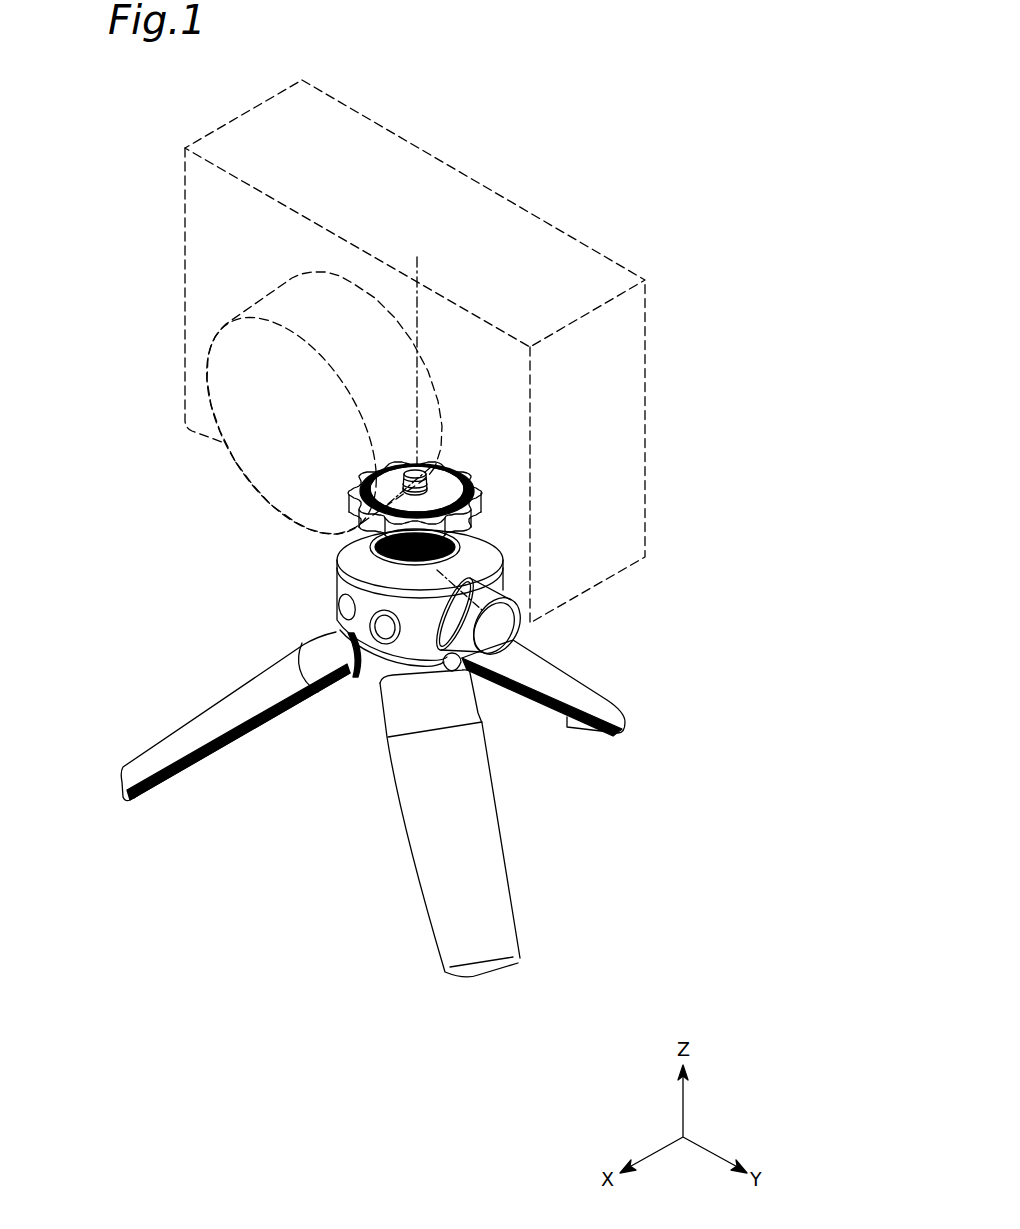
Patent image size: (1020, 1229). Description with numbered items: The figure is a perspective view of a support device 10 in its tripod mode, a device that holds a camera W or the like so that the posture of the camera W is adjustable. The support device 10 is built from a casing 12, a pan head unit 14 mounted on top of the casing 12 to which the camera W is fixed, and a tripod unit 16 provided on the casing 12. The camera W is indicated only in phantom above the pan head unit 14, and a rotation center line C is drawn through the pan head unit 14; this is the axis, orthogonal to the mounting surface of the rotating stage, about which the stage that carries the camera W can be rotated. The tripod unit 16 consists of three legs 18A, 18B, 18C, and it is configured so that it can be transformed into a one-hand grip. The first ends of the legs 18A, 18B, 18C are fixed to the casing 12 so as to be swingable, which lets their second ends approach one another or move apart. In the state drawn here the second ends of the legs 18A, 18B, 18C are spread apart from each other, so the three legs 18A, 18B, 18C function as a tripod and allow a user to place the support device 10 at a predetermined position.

The camera W is at (185, 275).
The rotation center line C is at (417, 257).
The support device 10 is at (206, 554).
The casing 12 is at (342, 580).
The pan head unit 14 is at (461, 471).
The tripod unit 16 is at (339, 792).
The leg 18A is at (445, 885).
The leg 18B is at (237, 691).
The leg 18C is at (555, 674).